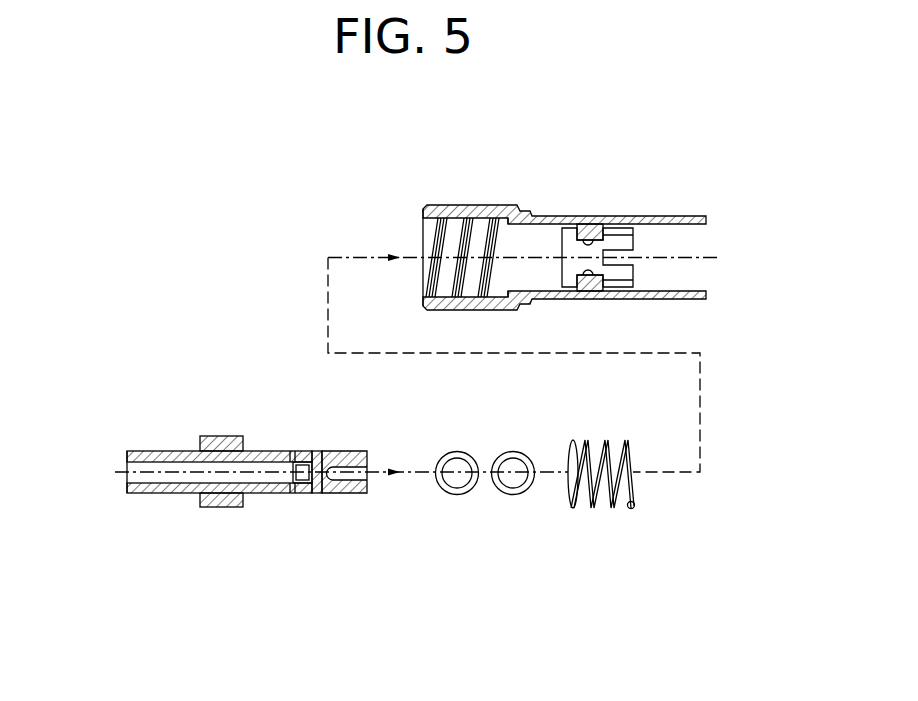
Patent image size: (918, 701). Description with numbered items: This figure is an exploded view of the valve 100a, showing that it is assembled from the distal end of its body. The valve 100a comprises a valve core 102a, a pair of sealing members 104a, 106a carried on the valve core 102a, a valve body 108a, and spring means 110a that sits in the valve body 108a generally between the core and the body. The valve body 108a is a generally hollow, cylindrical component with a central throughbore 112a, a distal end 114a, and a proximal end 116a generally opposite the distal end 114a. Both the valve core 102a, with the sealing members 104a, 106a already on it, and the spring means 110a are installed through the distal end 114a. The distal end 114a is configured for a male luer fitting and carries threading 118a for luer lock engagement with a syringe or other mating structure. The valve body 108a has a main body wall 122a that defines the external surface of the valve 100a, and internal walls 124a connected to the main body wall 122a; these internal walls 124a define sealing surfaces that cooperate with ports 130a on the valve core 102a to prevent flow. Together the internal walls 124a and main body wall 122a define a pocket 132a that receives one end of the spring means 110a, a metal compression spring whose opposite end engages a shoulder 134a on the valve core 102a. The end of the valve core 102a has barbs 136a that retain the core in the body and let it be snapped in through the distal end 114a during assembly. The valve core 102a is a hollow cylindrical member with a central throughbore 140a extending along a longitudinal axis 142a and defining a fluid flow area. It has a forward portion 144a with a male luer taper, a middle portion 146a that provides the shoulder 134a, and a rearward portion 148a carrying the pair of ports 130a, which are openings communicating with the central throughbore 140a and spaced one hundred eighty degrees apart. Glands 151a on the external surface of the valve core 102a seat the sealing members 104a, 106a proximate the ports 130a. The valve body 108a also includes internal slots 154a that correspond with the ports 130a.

The valve 100a is at (240, 585).
The valve core 102a is at (148, 432).
The sealing member 104a is at (441, 440).
The sealing member 106a is at (519, 437).
The valve body 108a is at (529, 191).
The spring means 110a is at (612, 521).
The central throughbore 112a is at (537, 275).
The distal end 114a is at (430, 304).
The proximal end 116a is at (707, 298).
The threading 118a is at (440, 237).
The main body wall 122a is at (510, 298).
The internal walls 124a is at (603, 229).
The ports 130a is at (300, 494).
The pocket 132a is at (540, 237).
The shoulder 134a is at (250, 450).
The barbs 136a is at (366, 493).
The central throughbore 140a is at (163, 488).
The longitudinal axis 142a is at (119, 478).
The forward portion 144a is at (177, 450).
The middle portion 146a is at (213, 508).
The rearward portion 148a is at (306, 451).
The glands 151a is at (318, 493).
The internal slots 154a is at (623, 282).